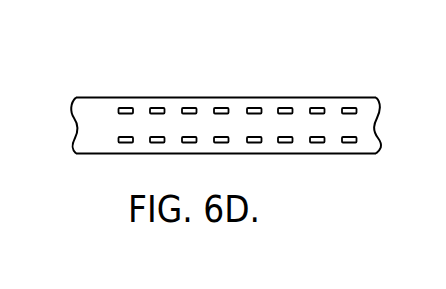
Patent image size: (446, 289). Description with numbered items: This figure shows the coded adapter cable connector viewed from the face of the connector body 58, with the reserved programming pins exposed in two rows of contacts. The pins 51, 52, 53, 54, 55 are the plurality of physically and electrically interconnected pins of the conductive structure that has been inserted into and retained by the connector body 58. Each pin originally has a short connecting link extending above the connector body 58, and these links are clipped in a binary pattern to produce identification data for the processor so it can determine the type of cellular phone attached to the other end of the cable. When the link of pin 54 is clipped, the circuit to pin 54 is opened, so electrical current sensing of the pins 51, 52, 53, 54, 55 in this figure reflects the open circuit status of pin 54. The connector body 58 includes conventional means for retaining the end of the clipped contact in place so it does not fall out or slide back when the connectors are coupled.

The pin 51 is at (127, 107).
The pin 52 is at (158, 107).
The pin 53 is at (192, 107).
The pin 54 is at (222, 107).
The pin 55 is at (255, 109).
The connector body 58 is at (92, 107).